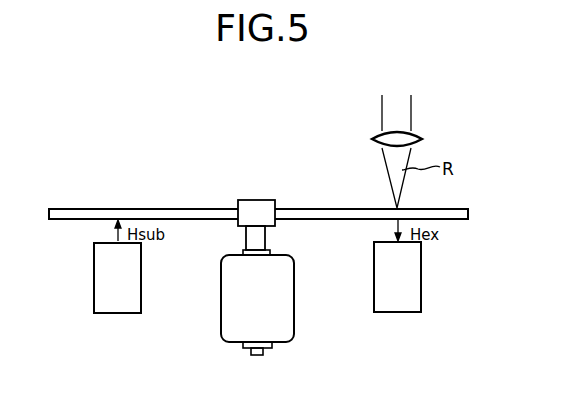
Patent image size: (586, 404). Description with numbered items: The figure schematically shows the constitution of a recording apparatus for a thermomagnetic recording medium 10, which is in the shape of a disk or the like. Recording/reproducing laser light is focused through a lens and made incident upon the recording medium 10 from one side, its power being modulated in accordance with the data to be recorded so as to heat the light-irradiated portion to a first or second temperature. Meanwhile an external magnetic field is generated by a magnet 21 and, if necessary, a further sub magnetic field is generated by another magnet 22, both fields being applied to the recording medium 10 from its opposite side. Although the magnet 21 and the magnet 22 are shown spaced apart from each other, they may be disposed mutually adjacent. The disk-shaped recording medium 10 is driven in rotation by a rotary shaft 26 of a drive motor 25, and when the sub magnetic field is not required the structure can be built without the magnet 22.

The thermomagnetic recording medium 10 is at (96, 206).
The magnet 21 is at (413, 297).
The magnet 22 is at (131, 313).
The drive motor 25 is at (283, 330).
The rotary shaft 26 is at (259, 238).